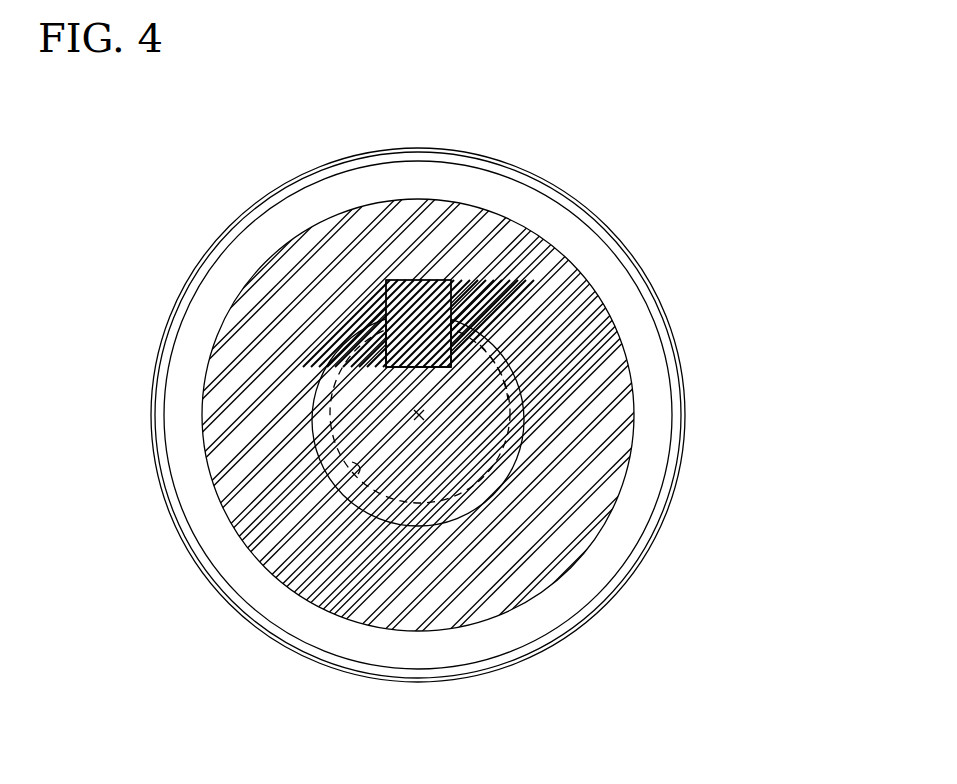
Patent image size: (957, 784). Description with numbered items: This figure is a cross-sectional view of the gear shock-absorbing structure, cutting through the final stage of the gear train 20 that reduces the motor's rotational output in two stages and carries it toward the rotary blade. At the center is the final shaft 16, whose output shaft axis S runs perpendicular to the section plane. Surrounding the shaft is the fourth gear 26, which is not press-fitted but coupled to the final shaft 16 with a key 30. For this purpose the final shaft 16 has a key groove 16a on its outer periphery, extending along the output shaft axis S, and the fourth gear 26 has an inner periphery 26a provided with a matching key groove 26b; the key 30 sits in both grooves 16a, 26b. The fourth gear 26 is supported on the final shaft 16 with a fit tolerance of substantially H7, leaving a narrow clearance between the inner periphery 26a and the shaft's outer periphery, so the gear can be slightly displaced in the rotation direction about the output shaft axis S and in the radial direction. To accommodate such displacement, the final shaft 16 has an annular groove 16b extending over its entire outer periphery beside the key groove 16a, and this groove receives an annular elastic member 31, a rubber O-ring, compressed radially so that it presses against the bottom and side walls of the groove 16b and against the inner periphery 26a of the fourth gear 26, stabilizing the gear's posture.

The gear train 20 is at (199, 206).
The fourth gear 26 is at (636, 268).
The inner periphery 26a is at (360, 468).
The key groove 26b is at (456, 297).
The final shaft 16 is at (313, 425).
The key groove 16a is at (385, 341).
The annular groove 16b is at (512, 410).
The key 30 is at (413, 280).
The elastic member 31 is at (505, 385).
The output shaft axis S is at (420, 415).